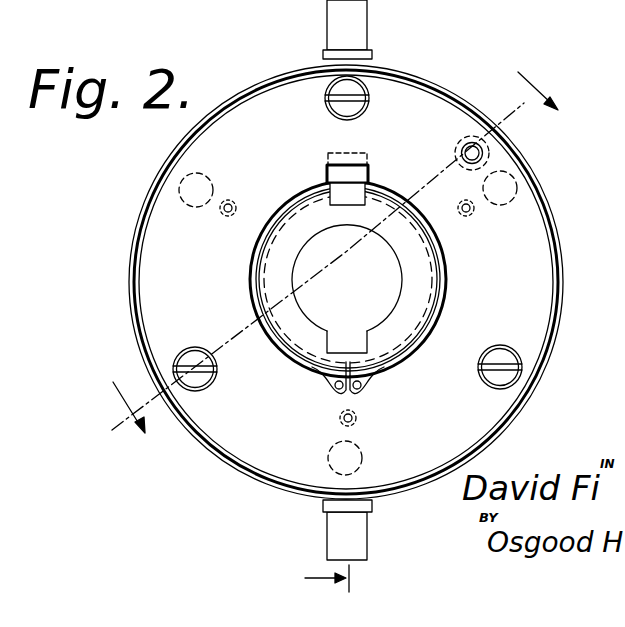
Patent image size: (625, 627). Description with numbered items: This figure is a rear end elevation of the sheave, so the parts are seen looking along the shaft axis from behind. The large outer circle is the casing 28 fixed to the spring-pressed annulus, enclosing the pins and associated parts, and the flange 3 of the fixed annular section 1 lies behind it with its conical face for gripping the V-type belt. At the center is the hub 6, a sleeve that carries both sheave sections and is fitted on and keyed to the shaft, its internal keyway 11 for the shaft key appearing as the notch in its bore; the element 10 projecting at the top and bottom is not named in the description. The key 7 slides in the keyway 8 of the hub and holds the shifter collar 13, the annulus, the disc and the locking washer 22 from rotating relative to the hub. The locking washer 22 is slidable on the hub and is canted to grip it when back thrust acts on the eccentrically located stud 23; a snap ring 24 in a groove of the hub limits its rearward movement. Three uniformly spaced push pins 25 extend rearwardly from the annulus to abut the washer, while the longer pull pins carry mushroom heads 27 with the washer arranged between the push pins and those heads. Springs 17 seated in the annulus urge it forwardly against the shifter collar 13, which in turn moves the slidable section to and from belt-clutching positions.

The annular section 1 is at (314, 578).
The flange 3 is at (321, 251).
The hub 6 is at (413, 275).
The key 7 is at (352, 173).
The keyway 8 is at (351, 197).
The stem 10 is at (350, 25).
The internal keyway 11 is at (348, 347).
The shifter collar 13 is at (375, 55).
The springs 17 is at (226, 218).
The locking washer 22 is at (545, 270).
The stud 23 is at (458, 150).
The snap ring 24 is at (446, 304).
The push pins 25 is at (206, 183).
The mushroom heads 27 is at (356, 104).
The casing 28 is at (558, 204).